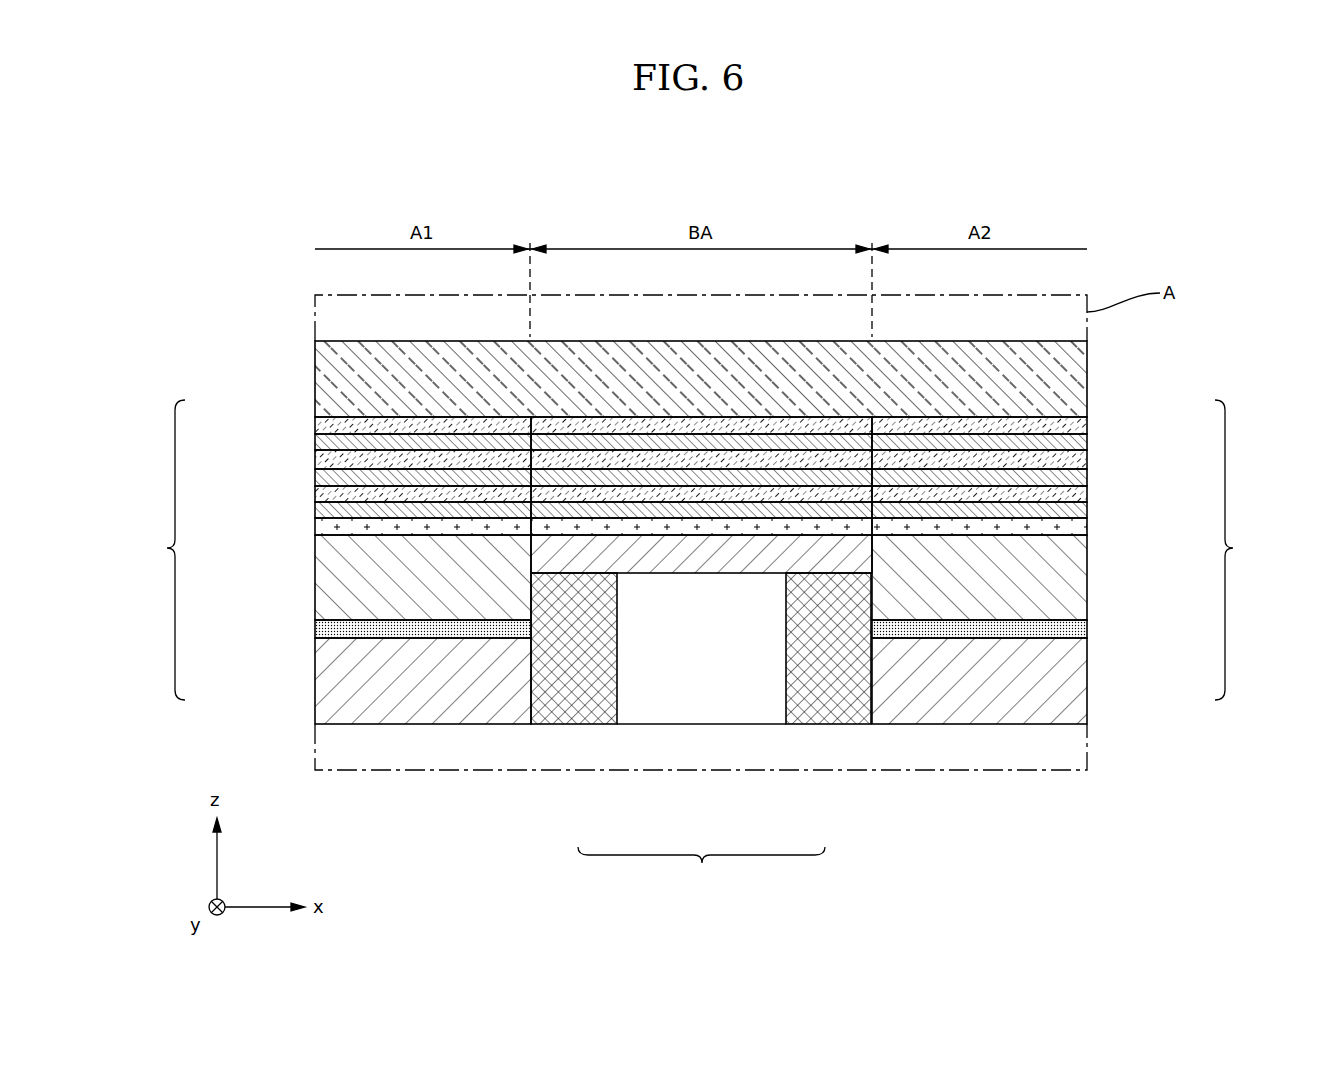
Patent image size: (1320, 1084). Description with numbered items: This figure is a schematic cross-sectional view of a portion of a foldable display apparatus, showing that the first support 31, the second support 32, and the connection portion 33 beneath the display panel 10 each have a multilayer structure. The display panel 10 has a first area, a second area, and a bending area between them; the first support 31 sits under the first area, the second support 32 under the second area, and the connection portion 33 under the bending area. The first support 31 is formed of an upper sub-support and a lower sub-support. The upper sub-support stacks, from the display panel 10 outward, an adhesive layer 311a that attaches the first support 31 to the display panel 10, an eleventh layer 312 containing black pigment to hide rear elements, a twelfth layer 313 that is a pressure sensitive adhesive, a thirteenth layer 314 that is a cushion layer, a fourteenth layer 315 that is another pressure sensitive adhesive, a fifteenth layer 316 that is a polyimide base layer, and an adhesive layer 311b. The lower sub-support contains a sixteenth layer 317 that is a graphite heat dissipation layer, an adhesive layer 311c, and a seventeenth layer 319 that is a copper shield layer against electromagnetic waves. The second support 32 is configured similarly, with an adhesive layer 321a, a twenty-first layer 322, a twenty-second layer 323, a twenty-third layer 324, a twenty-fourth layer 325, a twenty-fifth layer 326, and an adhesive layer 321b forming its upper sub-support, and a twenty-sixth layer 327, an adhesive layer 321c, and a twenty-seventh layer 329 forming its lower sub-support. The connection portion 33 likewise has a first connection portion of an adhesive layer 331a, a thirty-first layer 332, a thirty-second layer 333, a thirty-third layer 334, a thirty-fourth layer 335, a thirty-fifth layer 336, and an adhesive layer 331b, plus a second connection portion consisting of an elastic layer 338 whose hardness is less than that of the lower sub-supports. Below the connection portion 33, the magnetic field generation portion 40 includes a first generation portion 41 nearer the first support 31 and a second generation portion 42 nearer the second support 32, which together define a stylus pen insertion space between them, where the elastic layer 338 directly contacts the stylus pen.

The display panel 10 is at (1070, 365).
The first support 31 is at (339, 562).
The second support 32 is at (1065, 562).
The connection portion 33 is at (701, 652).
The magnetic field generation portion 40 is at (709, 693).
The first generation portion 41 is at (561, 700).
The second generation portion 42 is at (838, 705).
The adhesive layer 311a is at (317, 425).
The 11th layer 312 is at (317, 442).
The 12th layer 313 is at (317, 460).
The 13th layer 314 is at (317, 477).
The 14th layer 315 is at (317, 494).
The 15th layer 316 is at (317, 510).
The adhesive layer 311b is at (317, 527).
The 16th layer 317 is at (327, 578).
The adhesive layer 311c is at (317, 629).
The 17th layer 319 is at (327, 684).
The adhesive layer 321a is at (1085, 425).
The 21st layer 322 is at (1085, 442).
The 22nd layer 323 is at (1085, 460).
The 23rd layer 324 is at (1085, 477).
The 24th layer 325 is at (1085, 494).
The 25th layer 326 is at (1085, 510).
The adhesive layer 321b is at (1085, 527).
The 26th layer 327 is at (1075, 578).
The adhesive layer 321c is at (1085, 629).
The 27th layer 329 is at (1075, 684).
The adhesive layer 331a is at (593, 424).
The 31st layer 332 is at (630, 442).
The 32nd layer 333 is at (662, 460).
The 33rd layer 334 is at (693, 477).
The 34th layer 335 is at (717, 492).
The 35th layer 336 is at (742, 510).
The adhesive layer 331b is at (780, 522).
The elastic layer 338 is at (808, 563).